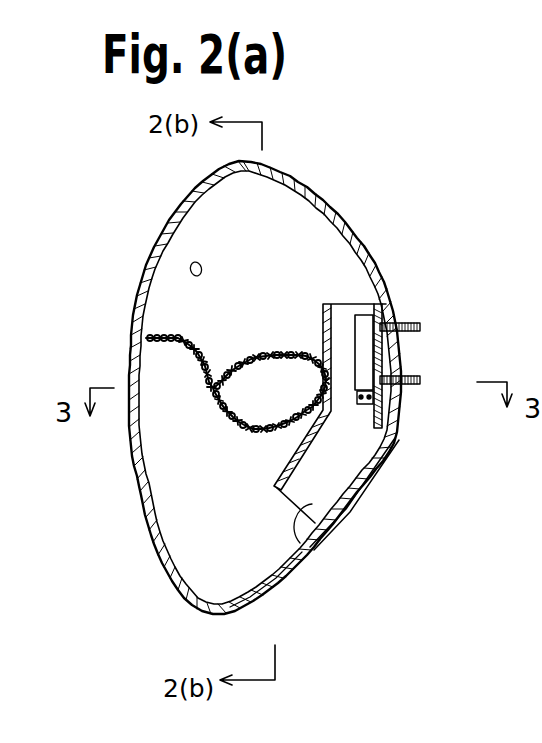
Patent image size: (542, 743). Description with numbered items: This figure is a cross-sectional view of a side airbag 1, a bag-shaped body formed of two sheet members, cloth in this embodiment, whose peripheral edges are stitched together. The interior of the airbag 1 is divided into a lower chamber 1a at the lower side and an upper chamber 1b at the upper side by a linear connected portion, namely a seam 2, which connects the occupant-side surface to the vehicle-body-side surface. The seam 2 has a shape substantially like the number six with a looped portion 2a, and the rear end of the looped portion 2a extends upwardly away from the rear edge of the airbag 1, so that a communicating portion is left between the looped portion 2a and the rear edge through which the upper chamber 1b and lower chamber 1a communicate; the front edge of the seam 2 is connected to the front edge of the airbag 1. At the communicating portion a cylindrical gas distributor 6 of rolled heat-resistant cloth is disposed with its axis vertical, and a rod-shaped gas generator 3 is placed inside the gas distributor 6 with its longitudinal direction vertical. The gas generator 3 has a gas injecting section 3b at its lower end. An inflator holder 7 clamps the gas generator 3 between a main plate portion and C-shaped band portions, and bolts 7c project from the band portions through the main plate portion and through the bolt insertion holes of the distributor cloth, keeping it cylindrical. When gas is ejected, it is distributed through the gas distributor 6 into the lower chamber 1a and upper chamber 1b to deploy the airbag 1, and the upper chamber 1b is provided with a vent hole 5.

The airbag 1 is at (123, 245).
The lower chamber 1a is at (168, 466).
The upper chamber 1b is at (247, 218).
The seam 2 is at (197, 356).
The looped portion 2a is at (268, 356).
The gas generator 3 is at (331, 304).
The gas injecting section 3b is at (360, 405).
The vent hole 5 is at (190, 276).
The reinforcing strip 6 is at (305, 542).
The inflator holder 7 is at (365, 305).
The bolts 7c is at (421, 327).